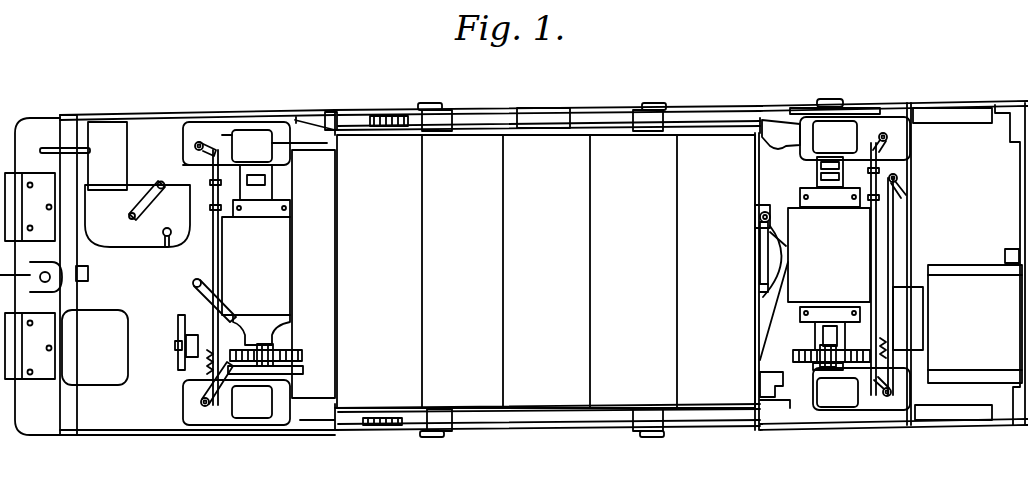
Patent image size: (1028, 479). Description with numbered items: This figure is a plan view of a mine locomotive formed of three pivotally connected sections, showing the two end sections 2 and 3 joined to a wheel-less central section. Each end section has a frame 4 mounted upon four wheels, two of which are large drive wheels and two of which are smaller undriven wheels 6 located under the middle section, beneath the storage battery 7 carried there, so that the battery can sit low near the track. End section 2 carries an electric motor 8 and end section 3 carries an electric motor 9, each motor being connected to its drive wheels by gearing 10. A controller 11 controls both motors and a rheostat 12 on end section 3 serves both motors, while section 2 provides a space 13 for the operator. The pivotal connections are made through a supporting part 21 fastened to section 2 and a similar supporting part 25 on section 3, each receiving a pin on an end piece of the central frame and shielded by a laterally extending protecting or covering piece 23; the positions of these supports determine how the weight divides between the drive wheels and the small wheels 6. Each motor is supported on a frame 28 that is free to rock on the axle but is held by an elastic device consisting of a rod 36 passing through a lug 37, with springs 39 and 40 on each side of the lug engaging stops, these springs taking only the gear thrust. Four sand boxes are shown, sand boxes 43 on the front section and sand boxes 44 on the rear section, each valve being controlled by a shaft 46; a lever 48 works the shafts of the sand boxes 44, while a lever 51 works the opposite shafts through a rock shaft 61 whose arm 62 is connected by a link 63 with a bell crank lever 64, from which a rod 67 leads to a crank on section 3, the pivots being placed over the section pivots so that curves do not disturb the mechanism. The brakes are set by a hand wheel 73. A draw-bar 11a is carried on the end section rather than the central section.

The end section 2 is at (514, 267).
The end section 3 is at (950, 225).
The frame 4 is at (293, 112).
The wheel 6 is at (262, 112).
The storage battery 7 is at (172, 362).
The electric motor 8 is at (256, 266).
The electric motor 9 is at (115, 395).
The gearing 10 is at (278, 356).
The controller 11 is at (135, 240).
The bolt 11a is at (1012, 240).
The rheostat 12 is at (975, 324).
The space 13 is at (160, 341).
The supporting part 21 is at (318, 122).
The protecting or covering piece 23 is at (760, 318).
The supporting part 25 is at (765, 118).
The frame 28 is at (266, 215).
The rod 36 is at (290, 378).
The lug 37 is at (538, 368).
The spring 39 is at (285, 360).
The spring 40 is at (262, 348).
The sand box 43 is at (230, 445).
The sand box 44 is at (888, 118).
The shaft 46 is at (198, 147).
The lever 48 is at (228, 352).
The lever 51 is at (232, 318).
The rock shaft 61 is at (758, 215).
The arm 62 is at (760, 222).
The link 63 is at (765, 248).
The bell crank lever 64 is at (770, 290).
The rod 67 is at (786, 256).
The hand wheel 73 is at (180, 322).